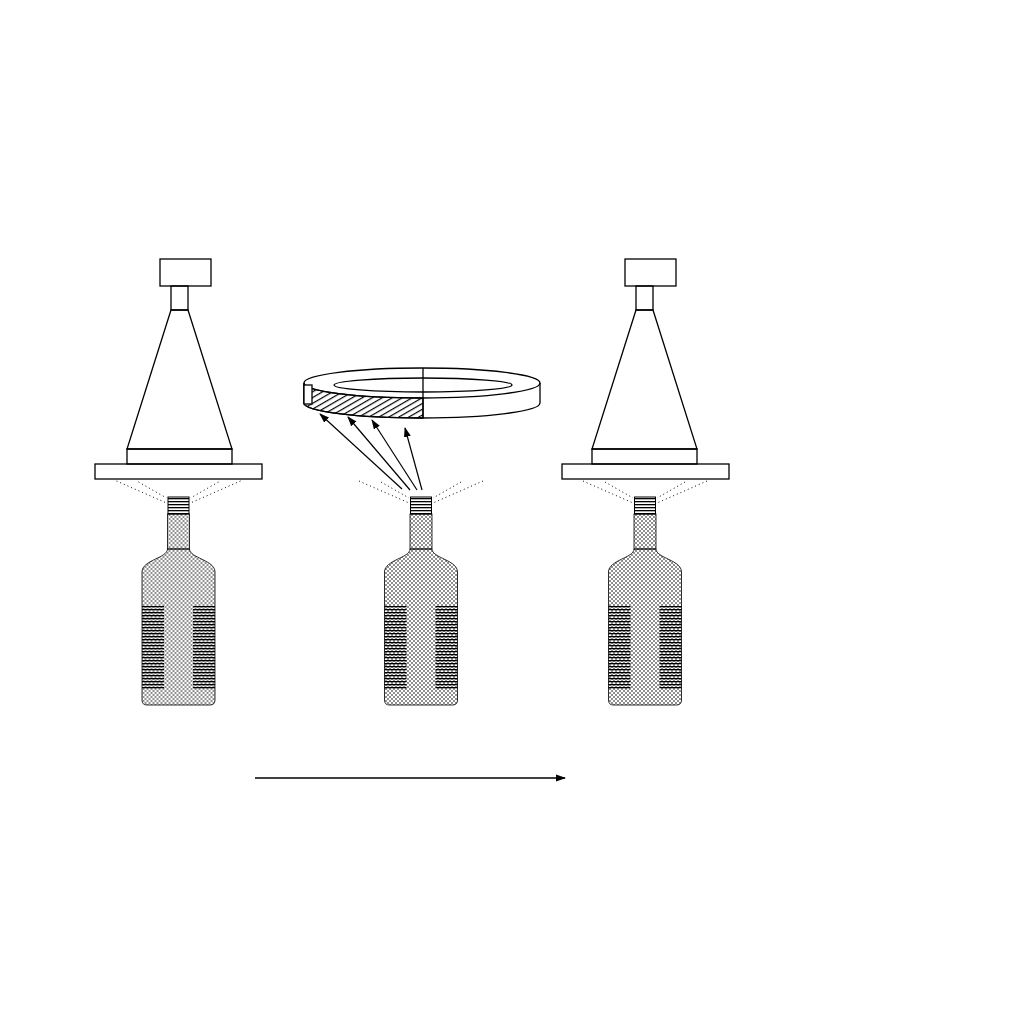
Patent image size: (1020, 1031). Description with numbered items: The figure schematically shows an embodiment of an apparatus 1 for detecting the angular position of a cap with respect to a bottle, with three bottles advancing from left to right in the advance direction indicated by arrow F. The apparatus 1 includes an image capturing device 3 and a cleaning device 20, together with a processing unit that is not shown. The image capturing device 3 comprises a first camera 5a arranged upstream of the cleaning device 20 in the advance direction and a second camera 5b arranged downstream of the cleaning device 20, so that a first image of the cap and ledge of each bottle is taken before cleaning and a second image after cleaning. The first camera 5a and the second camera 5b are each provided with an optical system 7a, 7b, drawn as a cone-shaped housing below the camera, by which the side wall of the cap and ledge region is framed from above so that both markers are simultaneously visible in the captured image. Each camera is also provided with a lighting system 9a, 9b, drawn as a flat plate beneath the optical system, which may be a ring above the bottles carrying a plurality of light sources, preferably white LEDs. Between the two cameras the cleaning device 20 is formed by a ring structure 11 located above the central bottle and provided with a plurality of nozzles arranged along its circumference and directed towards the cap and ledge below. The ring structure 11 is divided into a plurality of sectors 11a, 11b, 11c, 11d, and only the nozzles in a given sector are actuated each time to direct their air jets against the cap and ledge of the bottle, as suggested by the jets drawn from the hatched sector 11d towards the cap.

The apparatus 1 is at (593, 168).
The image capturing device 3 is at (613, 263).
The first camera 5a is at (171, 298).
The second camera 5b is at (653, 300).
The optical system 7a is at (142, 397).
The optical system 7b is at (678, 385).
The lighting system 9a is at (95, 470).
The lighting system 9b is at (723, 466).
The ring structure 11 is at (423, 368).
The sector 11a is at (304, 405).
The sector 11b is at (477, 410).
The sector 11c is at (485, 375).
The sector 11d is at (377, 370).
The cleaning device 20 is at (413, 355).